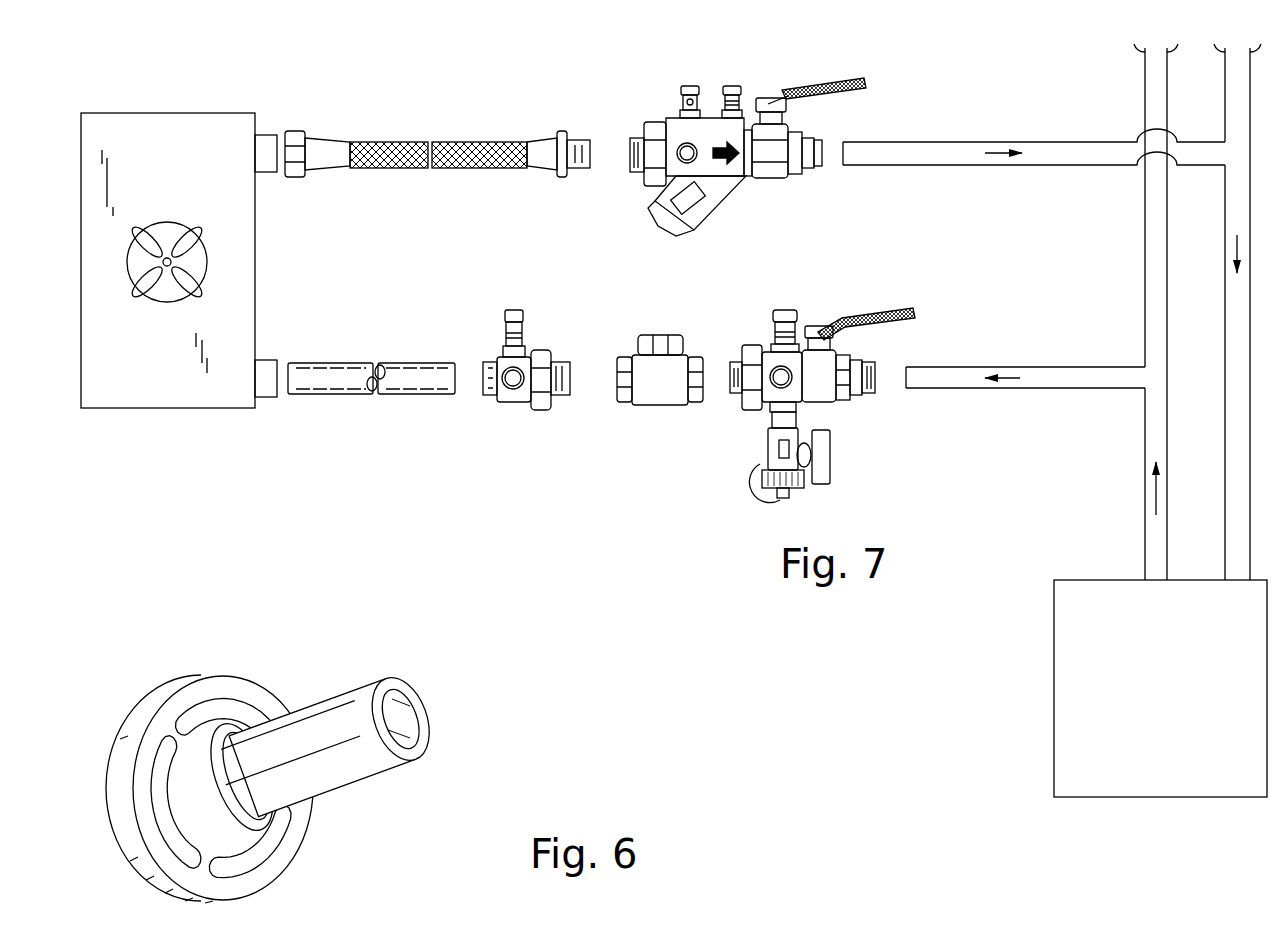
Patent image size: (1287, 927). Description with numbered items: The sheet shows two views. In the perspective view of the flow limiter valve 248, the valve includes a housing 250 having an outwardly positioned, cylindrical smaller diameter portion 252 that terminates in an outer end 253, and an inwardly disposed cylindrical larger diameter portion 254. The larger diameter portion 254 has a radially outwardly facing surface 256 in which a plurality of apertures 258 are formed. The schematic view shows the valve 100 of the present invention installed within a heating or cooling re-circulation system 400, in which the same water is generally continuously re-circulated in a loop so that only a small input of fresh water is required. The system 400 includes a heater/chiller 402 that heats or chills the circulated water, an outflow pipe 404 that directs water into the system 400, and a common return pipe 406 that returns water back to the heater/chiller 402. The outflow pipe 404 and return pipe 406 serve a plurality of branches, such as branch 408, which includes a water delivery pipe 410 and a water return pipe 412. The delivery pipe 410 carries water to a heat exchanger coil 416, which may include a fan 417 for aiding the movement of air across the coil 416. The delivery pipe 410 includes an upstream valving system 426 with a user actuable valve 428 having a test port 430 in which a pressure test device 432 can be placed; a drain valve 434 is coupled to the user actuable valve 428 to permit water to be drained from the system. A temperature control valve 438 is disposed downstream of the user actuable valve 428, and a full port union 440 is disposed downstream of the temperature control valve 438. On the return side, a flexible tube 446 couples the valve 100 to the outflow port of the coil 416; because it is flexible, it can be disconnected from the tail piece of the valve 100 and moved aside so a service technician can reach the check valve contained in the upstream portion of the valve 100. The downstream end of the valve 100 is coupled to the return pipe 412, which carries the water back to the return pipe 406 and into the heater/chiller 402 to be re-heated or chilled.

In FIG. 7, the valve 100 is at (760, 73).
In FIG. 7, the water return pipe 412 is at (755, 146).
In FIG. 7, the flexible tube 446 is at (386, 141).
In FIG. 7, the fan 417 is at (147, 222).
In FIG. 7, the heat exchanger coil 416 is at (179, 312).
In FIG. 7, the water delivery pipe 410 is at (328, 338).
In FIG. 7, the full port union 440 is at (497, 418).
In FIG. 7, the temperature control valve 438 is at (648, 416).
In FIG. 7, the branch 408 is at (563, 411).
In FIG. 7, the heating or cooling re-circulation system 400 is at (715, 391).
In FIG. 7, the upstream valving system 426 is at (782, 385).
In FIG. 7, the test port 430 is at (768, 348).
In FIG. 7, the pressure test device 432 is at (784, 308).
In FIG. 7, the user actuable valve 428 is at (805, 316).
In FIG. 7, the drain valve 434 is at (762, 470).
In FIG. 7, the outflow pipe 404 is at (1141, 526).
In FIG. 7, the common return pipe 406 is at (1221, 386).
In FIG. 7, the heater/chiller 402 is at (1046, 718).
In FIG. 6, the flow limiter valve 248 is at (295, 752).
In FIG. 6, the housing 250 is at (234, 752).
In FIG. 6, the smaller diameter portion 252 is at (345, 722).
In FIG. 6, the outer end 253 is at (430, 734).
In FIG. 6, the larger diameter portion 254 is at (303, 752).
In FIG. 6, the radially outwardly facing surface 256 is at (303, 840).
In FIG. 6, the apertures 258 is at (166, 735).